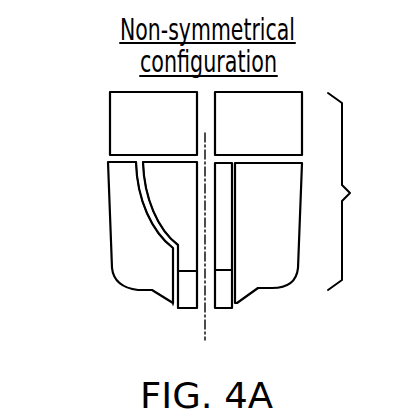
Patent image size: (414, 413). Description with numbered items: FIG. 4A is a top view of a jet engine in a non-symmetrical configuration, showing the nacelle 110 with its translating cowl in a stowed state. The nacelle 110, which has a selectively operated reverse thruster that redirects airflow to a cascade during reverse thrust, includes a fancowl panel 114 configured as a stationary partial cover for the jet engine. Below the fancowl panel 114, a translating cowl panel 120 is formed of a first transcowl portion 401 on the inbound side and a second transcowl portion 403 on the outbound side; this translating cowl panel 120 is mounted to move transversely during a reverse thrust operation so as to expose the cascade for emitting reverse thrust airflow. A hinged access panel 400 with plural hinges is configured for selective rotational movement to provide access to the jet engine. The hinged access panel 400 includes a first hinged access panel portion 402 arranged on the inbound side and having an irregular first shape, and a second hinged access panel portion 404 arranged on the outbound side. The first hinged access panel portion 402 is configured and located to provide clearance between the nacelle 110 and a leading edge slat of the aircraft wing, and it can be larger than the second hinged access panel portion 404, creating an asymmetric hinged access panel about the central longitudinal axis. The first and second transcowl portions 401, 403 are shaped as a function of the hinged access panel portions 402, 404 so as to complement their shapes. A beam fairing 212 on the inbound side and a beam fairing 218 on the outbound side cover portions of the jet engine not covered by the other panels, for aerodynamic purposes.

The nacelle 110 is at (362, 191).
The fancowl panel 114 is at (132, 122).
The translating cowl panel 120 is at (139, 290).
The beam fairing 212 is at (187, 290).
The beam fairing 218 is at (223, 290).
The hinged access panel 400 is at (168, 200).
The first transcowl portion 401 is at (133, 262).
The first hinged access panel portion 402 is at (163, 178).
The second transcowl portion 403 is at (283, 288).
The second hinged access panel portion 404 is at (222, 188).